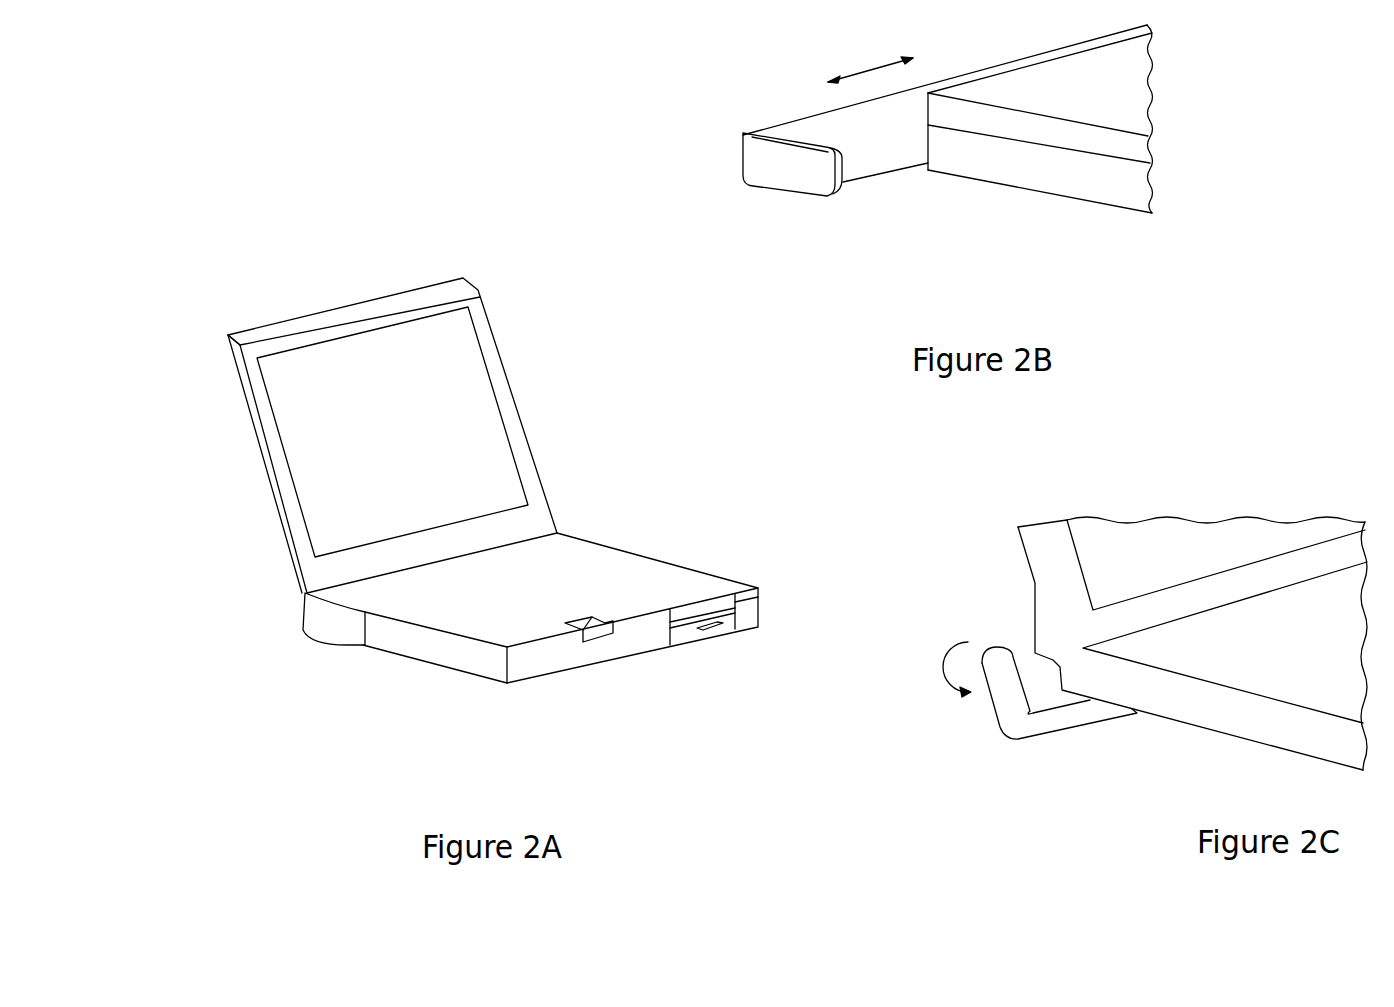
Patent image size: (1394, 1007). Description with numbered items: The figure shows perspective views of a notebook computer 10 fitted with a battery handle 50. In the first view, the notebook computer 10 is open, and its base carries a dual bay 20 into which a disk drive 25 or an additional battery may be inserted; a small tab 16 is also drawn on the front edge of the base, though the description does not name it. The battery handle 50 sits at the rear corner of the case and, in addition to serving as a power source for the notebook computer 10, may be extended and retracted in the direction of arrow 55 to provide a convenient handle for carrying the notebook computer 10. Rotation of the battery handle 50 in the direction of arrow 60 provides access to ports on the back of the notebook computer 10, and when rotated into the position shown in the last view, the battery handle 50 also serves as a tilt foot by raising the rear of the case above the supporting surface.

In FIG. 2A, the notebook computer 10 is at (345, 256).
In FIG. 2B, the notebook computer 10 is at (1045, 210).
In FIG. 2C, the notebook computer 10 is at (991, 583).
In FIG. 2A, the release button 16 is at (587, 618).
In FIG. 2A, the dual bay 20 is at (757, 591).
In FIG. 2A, the disk drive 25 is at (713, 635).
In FIG. 2A, the battery handle 50 is at (330, 627).
In FIG. 2B, the battery handle 50 is at (783, 190).
In FIG. 2C, the battery handle 50 is at (1015, 742).
In FIG. 2B, the arrow 55 is at (865, 70).
In FIG. 2C, the arrow 60 is at (940, 657).